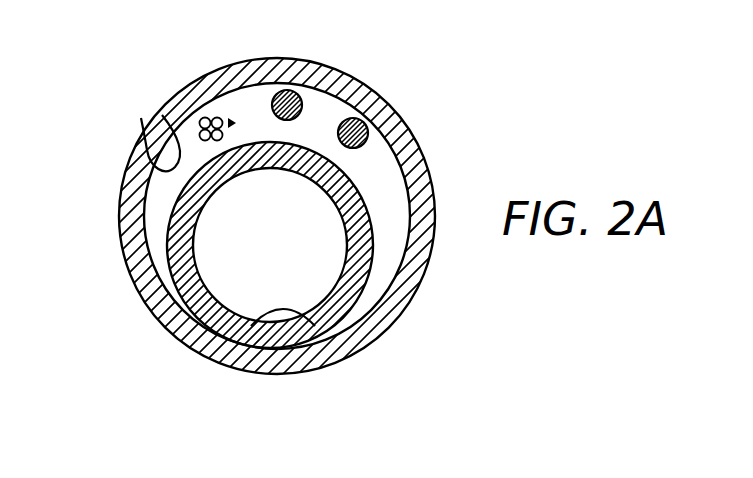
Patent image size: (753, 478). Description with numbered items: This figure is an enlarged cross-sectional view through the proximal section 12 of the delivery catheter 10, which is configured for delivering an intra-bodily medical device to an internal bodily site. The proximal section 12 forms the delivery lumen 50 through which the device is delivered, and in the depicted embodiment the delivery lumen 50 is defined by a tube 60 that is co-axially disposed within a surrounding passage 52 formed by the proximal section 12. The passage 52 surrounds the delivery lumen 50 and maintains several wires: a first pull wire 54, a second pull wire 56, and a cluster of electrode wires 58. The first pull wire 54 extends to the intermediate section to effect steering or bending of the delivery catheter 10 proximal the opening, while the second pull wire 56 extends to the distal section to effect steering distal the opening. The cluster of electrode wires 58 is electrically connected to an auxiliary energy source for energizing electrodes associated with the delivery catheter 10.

The delivery catheter 10 is at (163, 349).
The proximal section 12 is at (116, 200).
The delivery lumen 50 is at (300, 315).
The passage 52 is at (162, 115).
The first pull wire 54 is at (355, 118).
The second pull wire 56 is at (287, 90).
The cluster of electrode wires 58 is at (204, 118).
The tube 60 is at (178, 264).